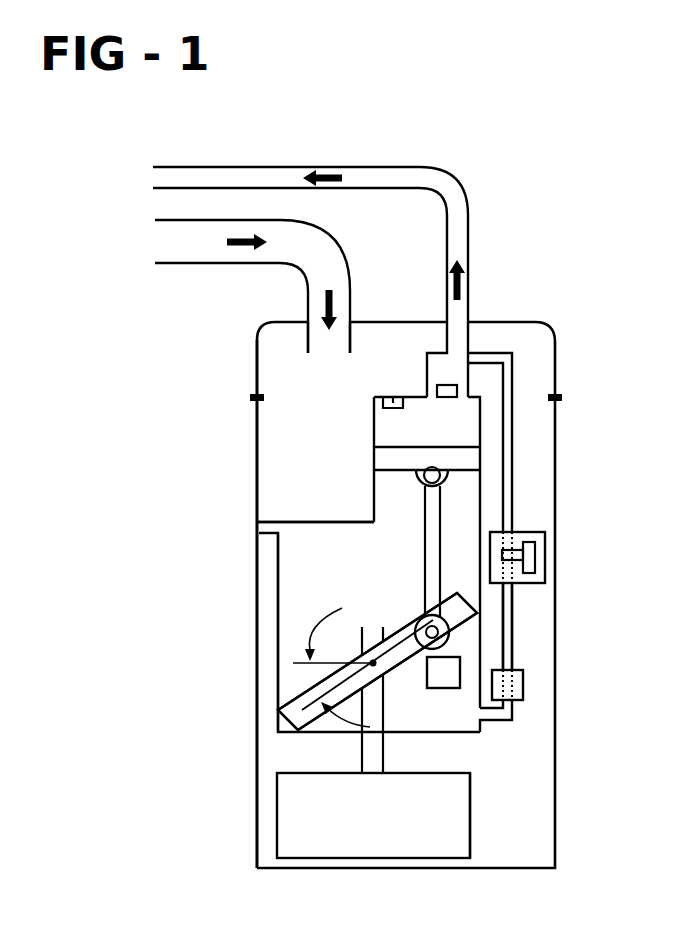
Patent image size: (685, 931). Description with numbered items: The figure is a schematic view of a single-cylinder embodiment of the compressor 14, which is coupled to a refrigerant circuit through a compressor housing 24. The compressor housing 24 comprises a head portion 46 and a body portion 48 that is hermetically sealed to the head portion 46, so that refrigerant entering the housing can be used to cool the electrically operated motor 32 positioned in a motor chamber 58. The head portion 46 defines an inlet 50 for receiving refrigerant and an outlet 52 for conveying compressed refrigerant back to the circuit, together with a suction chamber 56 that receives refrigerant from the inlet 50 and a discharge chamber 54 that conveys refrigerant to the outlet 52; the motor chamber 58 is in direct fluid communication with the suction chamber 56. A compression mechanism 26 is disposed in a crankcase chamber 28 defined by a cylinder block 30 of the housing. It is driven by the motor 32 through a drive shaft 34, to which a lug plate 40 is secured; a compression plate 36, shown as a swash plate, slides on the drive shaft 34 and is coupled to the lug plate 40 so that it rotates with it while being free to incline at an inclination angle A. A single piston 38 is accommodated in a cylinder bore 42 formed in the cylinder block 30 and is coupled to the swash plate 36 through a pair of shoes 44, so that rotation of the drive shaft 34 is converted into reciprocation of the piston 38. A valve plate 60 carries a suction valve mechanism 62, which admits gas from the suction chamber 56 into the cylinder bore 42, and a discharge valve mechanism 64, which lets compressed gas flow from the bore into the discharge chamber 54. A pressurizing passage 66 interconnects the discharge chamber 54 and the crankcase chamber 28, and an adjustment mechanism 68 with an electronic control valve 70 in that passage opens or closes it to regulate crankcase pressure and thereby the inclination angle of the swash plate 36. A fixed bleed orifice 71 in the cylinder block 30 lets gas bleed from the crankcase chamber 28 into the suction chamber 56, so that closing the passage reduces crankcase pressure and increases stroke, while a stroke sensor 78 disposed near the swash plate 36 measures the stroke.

The compressor 14 is at (485, 182).
The compressor housing 24 is at (229, 441).
The compression mechanism 26 is at (390, 610).
The crankcase chamber 28 is at (369, 632).
The cylinder block 30 is at (277, 648).
The electrically operated motor 32 is at (373, 815).
The drive shaft 34 is at (360, 748).
The compression plate 36 is at (290, 716).
The piston 38 is at (467, 458).
The lug plate 40 is at (410, 690).
The cylinder bore 42 is at (460, 437).
The shoes 44 is at (456, 618).
The head portion 46 is at (556, 378).
The body portion 48 is at (556, 797).
The inlet 50 is at (318, 334).
The outlet 52 is at (465, 333).
The discharge chamber 54 is at (450, 372).
The suction chamber 56 is at (315, 481).
The motor chamber 58 is at (499, 815).
The valve plate 60 is at (417, 397).
The suction valve mechanism 62 is at (380, 393).
The discharge valve mechanism 64 is at (448, 396).
The pressurizing passage 66 is at (508, 625).
The adjustment mechanism 68 is at (559, 546).
The electronic control valve 70 is at (537, 565).
The fixed bleed orifice 71 is at (257, 527).
The stroke sensor 78 is at (523, 687).